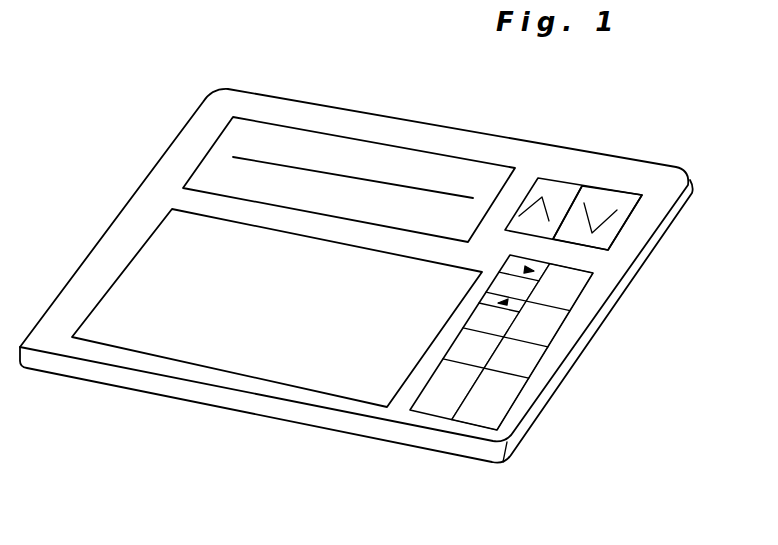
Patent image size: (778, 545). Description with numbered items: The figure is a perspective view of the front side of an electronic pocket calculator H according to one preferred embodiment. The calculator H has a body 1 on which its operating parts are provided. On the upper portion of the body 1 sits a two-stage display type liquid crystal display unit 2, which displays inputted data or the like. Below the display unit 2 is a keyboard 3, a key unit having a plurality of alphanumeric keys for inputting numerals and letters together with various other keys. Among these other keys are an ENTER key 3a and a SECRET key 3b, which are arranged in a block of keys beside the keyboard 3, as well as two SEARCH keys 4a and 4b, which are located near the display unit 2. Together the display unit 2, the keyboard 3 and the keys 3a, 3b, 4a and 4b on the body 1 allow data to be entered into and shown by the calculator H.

The body 1 is at (555, 382).
The electronic pocket calculator H is at (173, 401).
The liquid crystal display unit 2 is at (332, 143).
The keyboard 3 is at (267, 368).
The ENTER key 3a is at (481, 421).
The SECRET key 3b is at (566, 313).
The SEARCH key 4a is at (553, 188).
The SEARCH key 4b is at (612, 197).